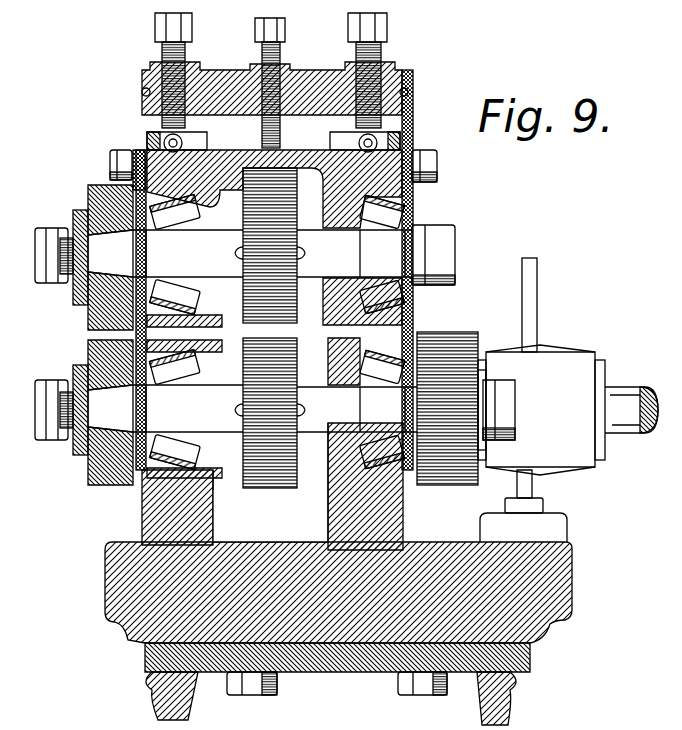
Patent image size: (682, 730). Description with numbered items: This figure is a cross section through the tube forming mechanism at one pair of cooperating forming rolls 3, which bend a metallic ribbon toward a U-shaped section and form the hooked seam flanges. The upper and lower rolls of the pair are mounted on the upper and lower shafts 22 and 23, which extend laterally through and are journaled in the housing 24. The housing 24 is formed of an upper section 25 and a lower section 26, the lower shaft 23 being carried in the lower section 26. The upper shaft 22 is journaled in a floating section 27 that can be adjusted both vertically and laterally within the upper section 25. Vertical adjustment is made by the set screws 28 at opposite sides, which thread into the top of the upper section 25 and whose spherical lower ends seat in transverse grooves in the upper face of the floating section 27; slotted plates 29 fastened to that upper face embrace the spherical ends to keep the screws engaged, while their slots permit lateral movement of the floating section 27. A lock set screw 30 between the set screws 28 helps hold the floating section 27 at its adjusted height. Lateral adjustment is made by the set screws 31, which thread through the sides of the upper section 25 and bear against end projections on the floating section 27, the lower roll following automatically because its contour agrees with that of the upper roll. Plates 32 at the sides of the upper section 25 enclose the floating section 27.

The pair of cooperating forming rolls 3 is at (78, 334).
The upper shaft 22 is at (230, 262).
The lower shaft 23 is at (228, 418).
The housing 24 is at (140, 503).
The upper section 25 is at (142, 152).
The lower section 26 is at (153, 522).
The floating section 27 is at (385, 177).
The set screws 28 is at (185, 60).
The slotted plates 29 is at (145, 138).
The lock set screw 30 is at (295, 72).
The set screws 31 is at (110, 160).
The plates 32 is at (142, 115).